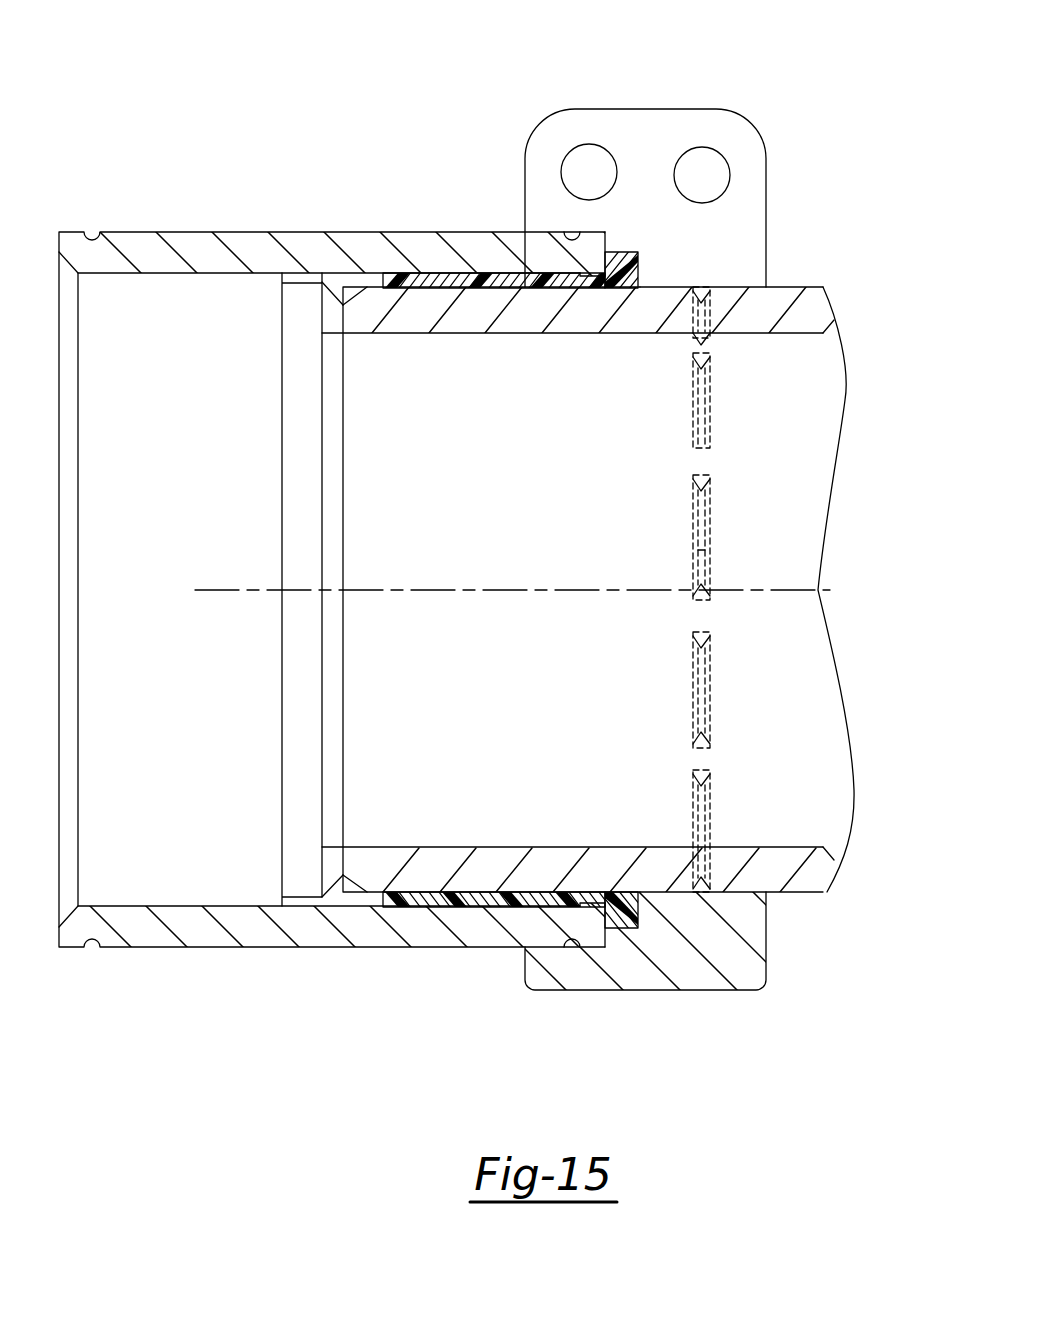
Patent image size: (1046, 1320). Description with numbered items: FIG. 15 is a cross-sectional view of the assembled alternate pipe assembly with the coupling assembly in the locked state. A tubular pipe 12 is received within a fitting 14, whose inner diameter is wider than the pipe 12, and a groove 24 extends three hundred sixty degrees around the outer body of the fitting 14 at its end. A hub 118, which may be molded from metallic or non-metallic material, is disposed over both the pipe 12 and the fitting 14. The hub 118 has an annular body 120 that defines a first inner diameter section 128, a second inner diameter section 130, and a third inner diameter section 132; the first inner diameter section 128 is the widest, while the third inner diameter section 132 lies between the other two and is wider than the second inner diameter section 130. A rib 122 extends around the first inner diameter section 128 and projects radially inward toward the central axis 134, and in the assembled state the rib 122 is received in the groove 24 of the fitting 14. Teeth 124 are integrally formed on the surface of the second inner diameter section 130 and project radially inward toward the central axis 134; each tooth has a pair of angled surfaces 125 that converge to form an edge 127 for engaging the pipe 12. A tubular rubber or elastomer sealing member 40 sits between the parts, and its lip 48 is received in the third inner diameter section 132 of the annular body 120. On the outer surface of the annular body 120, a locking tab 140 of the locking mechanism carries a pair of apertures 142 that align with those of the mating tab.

The pipe 12 is at (854, 863).
The fitting 14 is at (221, 228).
The groove 24 is at (597, 270).
The sealing member 40 is at (474, 293).
The lip 48 is at (640, 263).
The hub 118 is at (754, 1014).
The annular body 120 is at (770, 989).
The rib 122 is at (570, 236).
The teeth 124 is at (703, 420).
The angled surfaces 125 is at (708, 680).
The edge 127 is at (708, 550).
The first inner diameter section 128 is at (598, 272).
The second inner diameter section 130 is at (743, 287).
The third inner diameter section 132 is at (630, 255).
The central axis 134 is at (567, 590).
The locking tab 140 is at (745, 148).
The apertures 142 is at (693, 165).